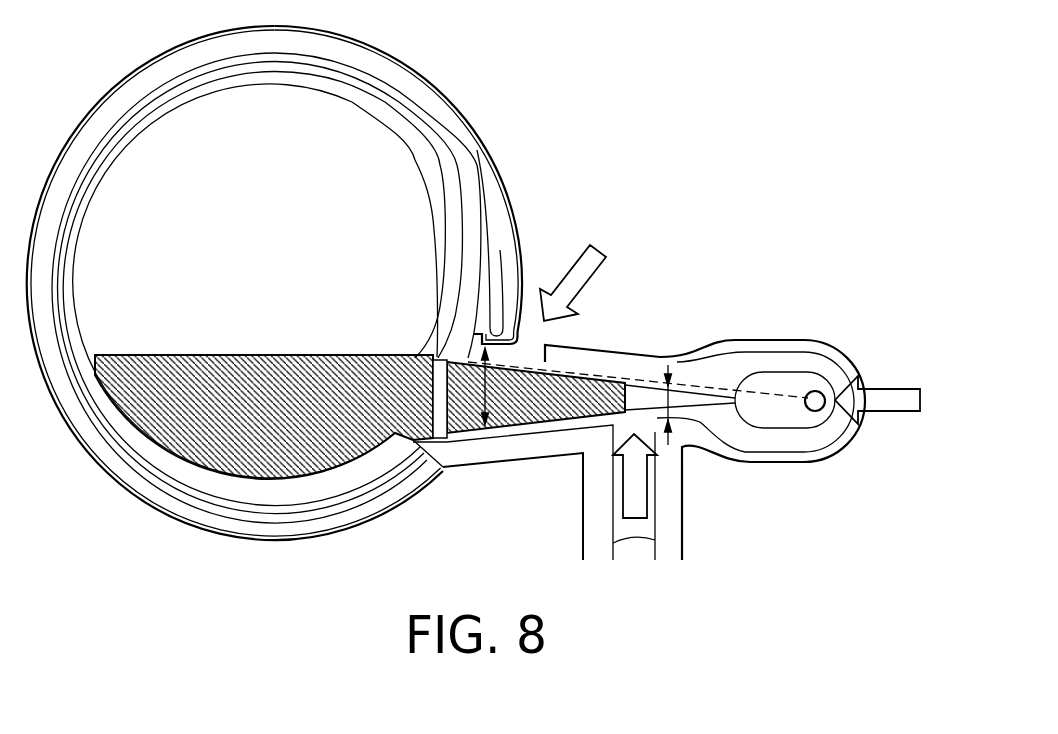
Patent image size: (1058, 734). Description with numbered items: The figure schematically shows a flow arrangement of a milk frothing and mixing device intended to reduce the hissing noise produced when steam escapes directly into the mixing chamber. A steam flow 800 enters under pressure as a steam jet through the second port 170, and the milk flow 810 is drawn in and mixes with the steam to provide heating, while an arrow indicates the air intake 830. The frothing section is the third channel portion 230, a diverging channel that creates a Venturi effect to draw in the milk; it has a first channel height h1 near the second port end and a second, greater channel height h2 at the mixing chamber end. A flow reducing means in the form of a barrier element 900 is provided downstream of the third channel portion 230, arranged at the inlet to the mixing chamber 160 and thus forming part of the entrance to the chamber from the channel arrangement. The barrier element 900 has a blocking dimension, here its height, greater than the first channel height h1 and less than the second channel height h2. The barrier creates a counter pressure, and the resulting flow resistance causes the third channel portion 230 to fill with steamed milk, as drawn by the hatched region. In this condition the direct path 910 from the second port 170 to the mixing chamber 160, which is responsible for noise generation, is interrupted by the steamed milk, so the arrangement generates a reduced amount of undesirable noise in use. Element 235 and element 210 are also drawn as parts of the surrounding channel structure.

The mixing chamber 160 is at (168, 135).
The barrier element 900 is at (378, 368).
The second channel height h2 is at (478, 372).
The air intake 830 is at (593, 244).
The upper duct wall 235 is at (532, 343).
The direct path 910 is at (750, 393).
The third channel portion 230 is at (640, 402).
The second port 170 is at (815, 392).
The steam flow 800 is at (885, 412).
The milk flow 810 is at (622, 490).
The lower conduit 210 is at (622, 550).
The first channel height h1 is at (672, 405).